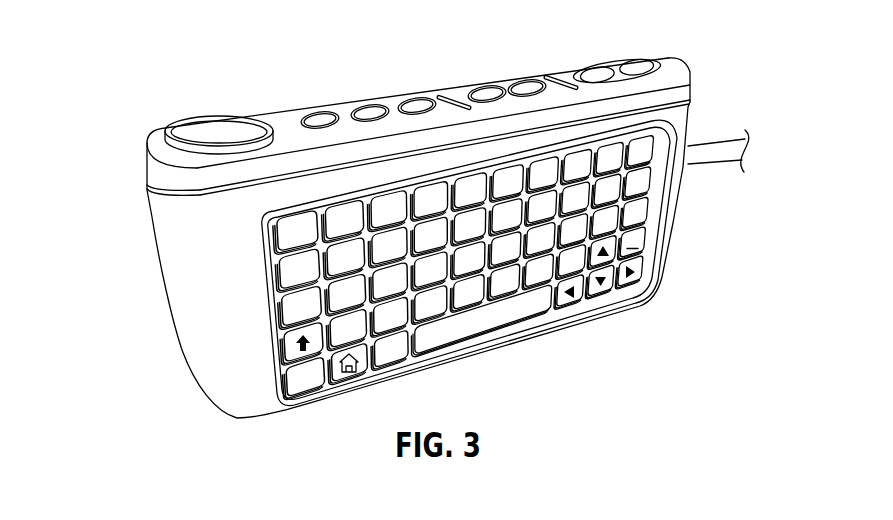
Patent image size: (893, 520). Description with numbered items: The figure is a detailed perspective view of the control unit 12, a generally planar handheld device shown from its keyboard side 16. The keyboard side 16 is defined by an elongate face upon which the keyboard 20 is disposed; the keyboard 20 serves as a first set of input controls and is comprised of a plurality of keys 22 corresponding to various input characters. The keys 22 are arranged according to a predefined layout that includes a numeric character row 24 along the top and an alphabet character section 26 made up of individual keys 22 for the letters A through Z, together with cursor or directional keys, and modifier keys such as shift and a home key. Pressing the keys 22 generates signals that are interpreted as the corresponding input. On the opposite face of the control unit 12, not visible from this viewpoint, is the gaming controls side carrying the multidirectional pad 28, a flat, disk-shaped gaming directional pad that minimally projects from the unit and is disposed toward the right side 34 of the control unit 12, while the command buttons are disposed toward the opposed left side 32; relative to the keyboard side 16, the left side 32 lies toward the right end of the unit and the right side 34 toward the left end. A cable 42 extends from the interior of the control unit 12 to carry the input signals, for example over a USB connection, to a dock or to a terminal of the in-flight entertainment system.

The control unit 12 is at (417, 268).
The keyboard side 16 is at (233, 438).
The keyboard 20 is at (650, 217).
The keys 22 is at (283, 282).
The numeric character row 24 is at (262, 239).
The alphabet character section 26 is at (246, 96).
The multidirectional pad 28 is at (585, 313).
The left side 32 is at (708, 93).
The right side 34 is at (140, 221).
The cable 42 is at (697, 166).